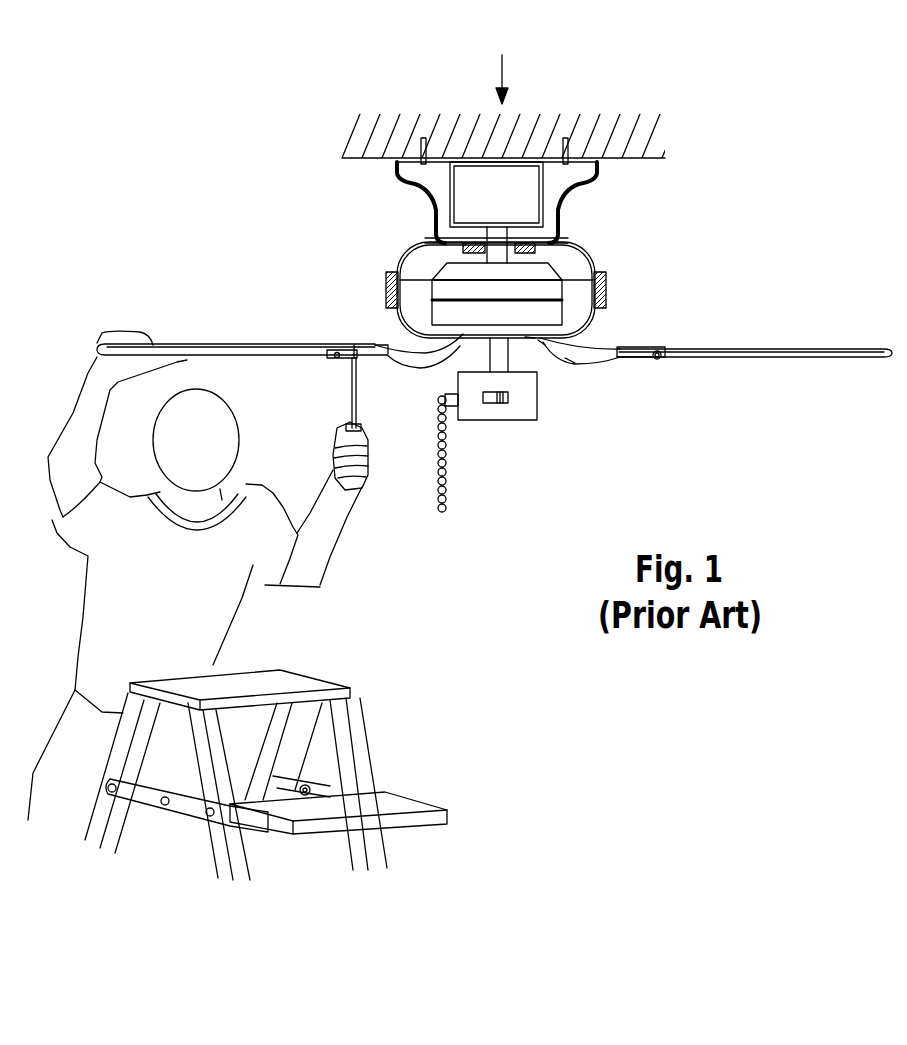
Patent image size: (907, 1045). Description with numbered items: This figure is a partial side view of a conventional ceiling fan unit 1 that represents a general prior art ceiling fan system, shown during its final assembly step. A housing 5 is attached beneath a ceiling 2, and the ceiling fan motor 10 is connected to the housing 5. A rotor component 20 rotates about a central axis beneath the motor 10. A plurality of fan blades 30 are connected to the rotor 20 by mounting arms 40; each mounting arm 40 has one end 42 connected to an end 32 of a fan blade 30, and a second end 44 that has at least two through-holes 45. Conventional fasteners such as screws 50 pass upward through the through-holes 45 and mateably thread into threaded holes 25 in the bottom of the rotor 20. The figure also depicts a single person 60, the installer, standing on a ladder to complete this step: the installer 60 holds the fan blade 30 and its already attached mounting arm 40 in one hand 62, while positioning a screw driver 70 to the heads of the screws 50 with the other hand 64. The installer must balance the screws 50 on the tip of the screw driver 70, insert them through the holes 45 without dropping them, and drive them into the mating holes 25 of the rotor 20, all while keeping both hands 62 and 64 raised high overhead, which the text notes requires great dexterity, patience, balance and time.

The ceiling fan unit 1 is at (502, 60).
The ceiling 2 is at (653, 150).
The housing 5 is at (575, 193).
The ceiling fan motor 10 is at (448, 297).
The rotor component 20 is at (400, 356).
The threaded holes 25 is at (532, 340).
The fan blades 30 is at (778, 362).
The end of fan blade 32 is at (620, 350).
The mounting arms 40 is at (563, 352).
The end of mounting arm 42 is at (655, 350).
The second end of mounting arm 44 is at (542, 343).
The through-holes 45 is at (570, 360).
The screws 50 is at (458, 338).
The person 60 is at (185, 612).
The hand 62 is at (103, 338).
The other hand 64 is at (323, 453).
The screw driver 70 is at (350, 398).